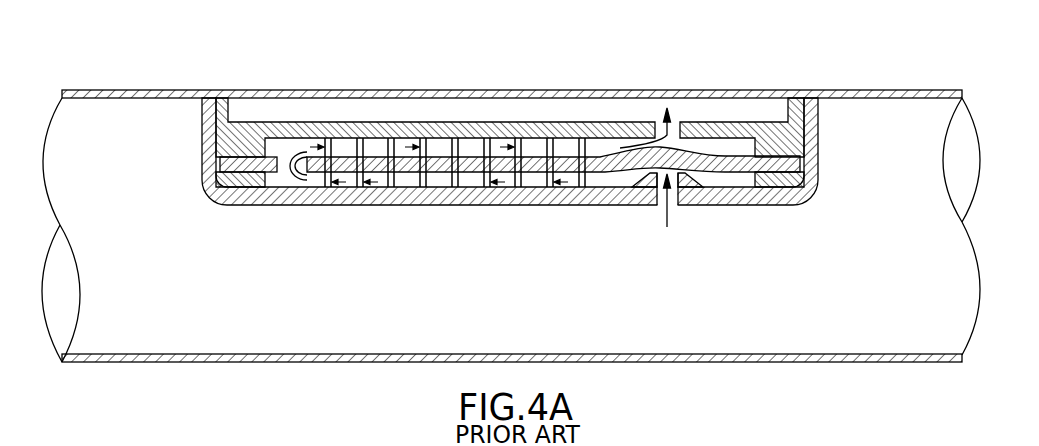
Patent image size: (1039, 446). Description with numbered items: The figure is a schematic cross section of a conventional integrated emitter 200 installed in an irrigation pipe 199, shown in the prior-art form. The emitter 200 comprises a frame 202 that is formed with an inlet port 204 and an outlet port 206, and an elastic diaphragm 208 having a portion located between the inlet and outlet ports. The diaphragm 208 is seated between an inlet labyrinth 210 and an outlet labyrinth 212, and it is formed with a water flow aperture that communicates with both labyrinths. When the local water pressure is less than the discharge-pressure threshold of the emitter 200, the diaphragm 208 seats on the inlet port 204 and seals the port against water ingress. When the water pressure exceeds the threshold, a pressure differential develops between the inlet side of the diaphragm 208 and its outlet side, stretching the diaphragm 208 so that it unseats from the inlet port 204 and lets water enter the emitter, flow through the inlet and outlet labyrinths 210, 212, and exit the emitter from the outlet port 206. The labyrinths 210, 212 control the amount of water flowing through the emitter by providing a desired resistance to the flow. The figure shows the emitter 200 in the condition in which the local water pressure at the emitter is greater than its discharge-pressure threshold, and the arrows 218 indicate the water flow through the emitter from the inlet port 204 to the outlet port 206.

The irrigation pipe 199 is at (108, 90).
The integrated emitter 200 is at (613, 168).
The frame 202 is at (803, 187).
The inlet port 204 is at (670, 212).
The outlet port 206 is at (705, 98).
The elastic diaphragm 208 is at (603, 152).
The inlet labyrinth 210 is at (315, 192).
The outlet labyrinth 212 is at (372, 146).
The arrows 218 is at (500, 190).